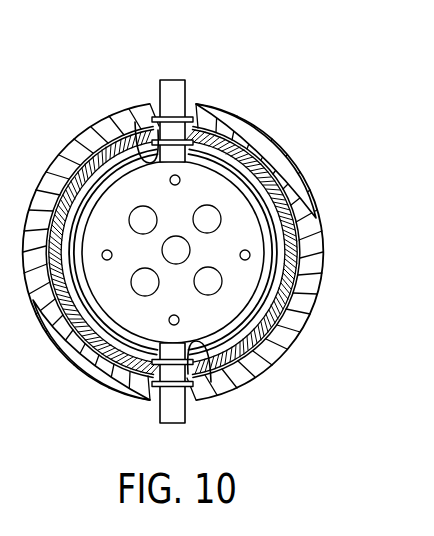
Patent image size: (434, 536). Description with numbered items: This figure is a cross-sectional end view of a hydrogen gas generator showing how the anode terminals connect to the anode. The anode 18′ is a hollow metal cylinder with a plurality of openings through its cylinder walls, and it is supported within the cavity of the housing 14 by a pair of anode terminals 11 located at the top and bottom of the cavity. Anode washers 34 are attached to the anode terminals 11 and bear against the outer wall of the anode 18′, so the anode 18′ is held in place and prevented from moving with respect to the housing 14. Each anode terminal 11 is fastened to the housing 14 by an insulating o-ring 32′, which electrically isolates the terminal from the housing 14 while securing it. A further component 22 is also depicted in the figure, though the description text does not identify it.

The anode terminal 11 is at (175, 91).
The housing 14 is at (312, 268).
The anode 18′ is at (257, 198).
The seal band 22 is at (78, 323).
The insulating o-ring 32′ is at (174, 118).
The anode washer 34 is at (133, 140).